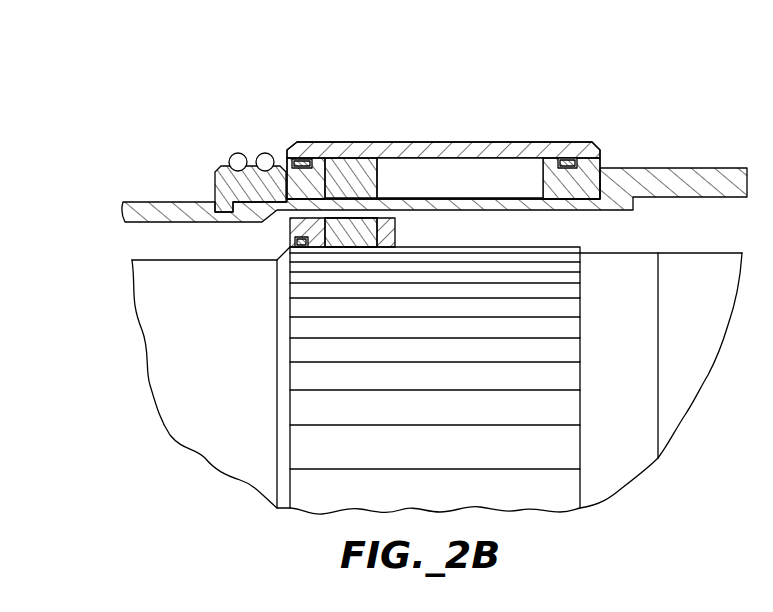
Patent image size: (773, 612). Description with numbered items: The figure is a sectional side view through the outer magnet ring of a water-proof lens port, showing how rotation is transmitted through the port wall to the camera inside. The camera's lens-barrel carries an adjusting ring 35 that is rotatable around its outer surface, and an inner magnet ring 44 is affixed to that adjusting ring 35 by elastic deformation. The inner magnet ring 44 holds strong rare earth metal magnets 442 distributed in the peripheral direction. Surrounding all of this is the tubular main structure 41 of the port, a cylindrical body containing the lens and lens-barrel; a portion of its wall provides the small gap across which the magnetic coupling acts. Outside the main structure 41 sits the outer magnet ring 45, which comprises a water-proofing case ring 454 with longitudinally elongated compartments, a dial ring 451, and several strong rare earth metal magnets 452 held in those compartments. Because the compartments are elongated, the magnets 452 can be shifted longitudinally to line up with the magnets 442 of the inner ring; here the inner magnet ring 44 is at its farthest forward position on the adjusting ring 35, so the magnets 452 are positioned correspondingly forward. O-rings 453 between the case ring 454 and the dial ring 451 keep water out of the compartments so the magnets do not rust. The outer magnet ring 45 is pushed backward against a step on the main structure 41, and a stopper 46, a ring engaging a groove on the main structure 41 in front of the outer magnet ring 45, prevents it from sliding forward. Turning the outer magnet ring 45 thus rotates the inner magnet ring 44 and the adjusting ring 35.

The adjusting ring 35 is at (543, 347).
The tubular main structure 41 is at (675, 200).
The inner magnet ring 44 is at (347, 235).
The rare earth metal magnets 442 is at (365, 228).
The outer magnet ring 45 is at (460, 122).
The dial ring 451 is at (458, 140).
The rare earth metal magnets 452 is at (350, 158).
The O-rings 453 is at (297, 158).
The water-proofing case ring 454 is at (590, 163).
The stopper 46 is at (228, 190).